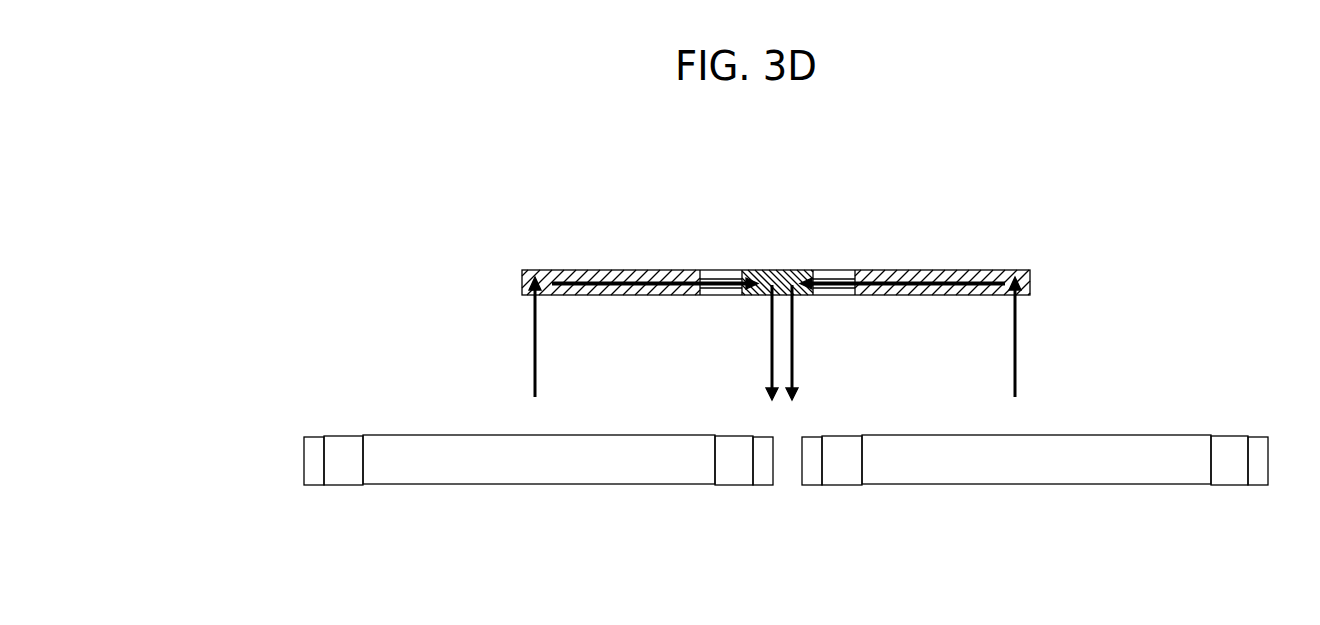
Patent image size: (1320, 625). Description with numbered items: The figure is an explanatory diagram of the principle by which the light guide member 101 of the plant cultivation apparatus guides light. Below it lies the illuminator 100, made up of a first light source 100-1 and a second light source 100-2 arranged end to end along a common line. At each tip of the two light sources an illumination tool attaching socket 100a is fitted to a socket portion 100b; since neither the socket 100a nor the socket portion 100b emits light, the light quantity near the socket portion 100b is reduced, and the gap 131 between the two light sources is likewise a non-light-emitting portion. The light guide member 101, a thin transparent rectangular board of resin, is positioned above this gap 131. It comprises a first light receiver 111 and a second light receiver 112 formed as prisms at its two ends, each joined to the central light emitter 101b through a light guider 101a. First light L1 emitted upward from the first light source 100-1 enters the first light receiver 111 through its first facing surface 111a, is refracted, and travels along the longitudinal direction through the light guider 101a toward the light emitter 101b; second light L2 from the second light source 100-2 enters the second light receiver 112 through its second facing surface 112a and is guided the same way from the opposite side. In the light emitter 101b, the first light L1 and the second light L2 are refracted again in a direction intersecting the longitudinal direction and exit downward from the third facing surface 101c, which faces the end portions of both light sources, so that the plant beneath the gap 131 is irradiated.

The light guide member 101 is at (495, 262).
The first light receiver 111 is at (598, 270).
The second light receiver 112 is at (965, 270).
The light guider 101a is at (708, 270).
The light emitter 101b is at (778, 270).
The third facing surface 101c is at (800, 292).
The first facing surface 111a is at (597, 295).
The second facing surface 112a is at (993, 295).
The illuminator 100 is at (751, 455).
The first light source 100-1 is at (420, 435).
The second light source 100-2 is at (1180, 435).
The illumination tool attaching socket 100a is at (315, 472).
The socket portion 100b is at (347, 472).
The gap 131 is at (787, 442).
The first light L1 is at (535, 335).
The second light L2 is at (1015, 335).